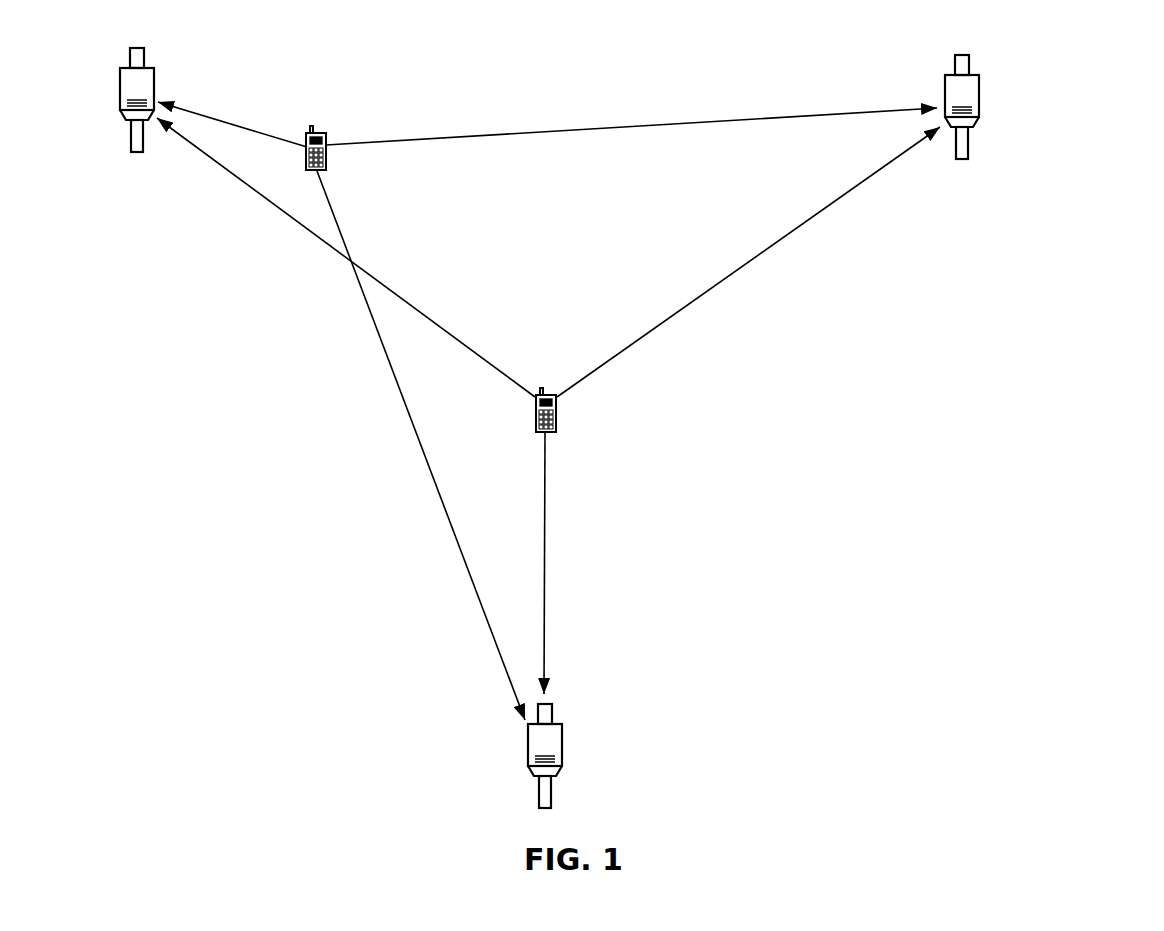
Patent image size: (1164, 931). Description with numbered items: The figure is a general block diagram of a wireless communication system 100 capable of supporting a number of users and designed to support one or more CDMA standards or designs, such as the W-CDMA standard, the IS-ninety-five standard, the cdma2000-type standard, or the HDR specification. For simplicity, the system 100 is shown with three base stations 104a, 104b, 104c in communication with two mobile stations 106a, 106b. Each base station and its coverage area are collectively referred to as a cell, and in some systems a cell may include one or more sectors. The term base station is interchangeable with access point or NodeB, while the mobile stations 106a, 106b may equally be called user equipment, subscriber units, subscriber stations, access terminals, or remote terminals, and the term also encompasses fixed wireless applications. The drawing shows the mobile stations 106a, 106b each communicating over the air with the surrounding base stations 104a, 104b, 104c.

The wireless communication system 100 is at (1090, 284).
The base station 104a is at (148, 68).
The base station 104b is at (973, 75).
The base station 104c is at (556, 724).
The mobile station 106a is at (318, 133).
The mobile station 106b is at (541, 432).